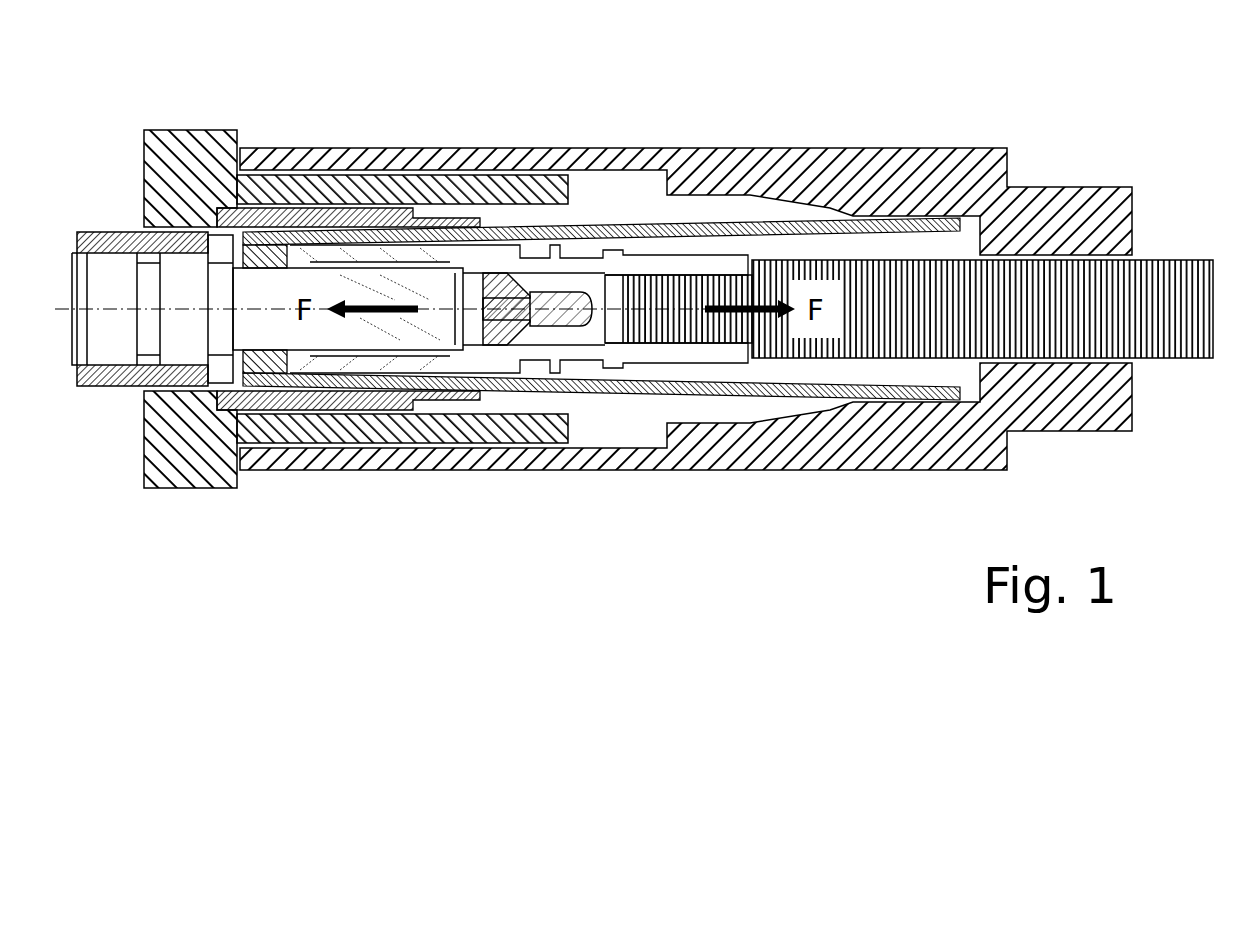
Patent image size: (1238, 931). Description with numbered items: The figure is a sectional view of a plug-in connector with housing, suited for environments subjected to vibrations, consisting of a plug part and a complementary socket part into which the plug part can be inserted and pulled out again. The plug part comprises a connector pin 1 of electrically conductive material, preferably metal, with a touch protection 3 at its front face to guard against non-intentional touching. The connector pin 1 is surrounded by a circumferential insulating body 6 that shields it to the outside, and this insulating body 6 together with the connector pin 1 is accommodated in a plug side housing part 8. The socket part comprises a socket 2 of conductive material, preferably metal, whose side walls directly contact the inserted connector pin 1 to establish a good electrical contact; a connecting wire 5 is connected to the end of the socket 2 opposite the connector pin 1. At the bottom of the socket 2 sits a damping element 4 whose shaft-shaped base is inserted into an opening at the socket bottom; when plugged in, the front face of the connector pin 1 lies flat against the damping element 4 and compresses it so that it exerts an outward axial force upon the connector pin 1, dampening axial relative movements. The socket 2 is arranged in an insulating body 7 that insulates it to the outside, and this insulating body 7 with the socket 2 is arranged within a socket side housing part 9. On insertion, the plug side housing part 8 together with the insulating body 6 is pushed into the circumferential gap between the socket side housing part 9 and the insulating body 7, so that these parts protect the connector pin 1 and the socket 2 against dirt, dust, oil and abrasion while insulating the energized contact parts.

The connector pin 1 is at (372, 295).
The socket 2 is at (410, 252).
The touch protection 3 is at (490, 295).
The damping element 4 is at (503, 300).
The connecting wire 5 is at (888, 297).
The insulating body 6 is at (262, 150).
The insulating body 7 is at (298, 190).
The plug side housing part 8 is at (167, 153).
The socket side housing part 9 is at (720, 177).